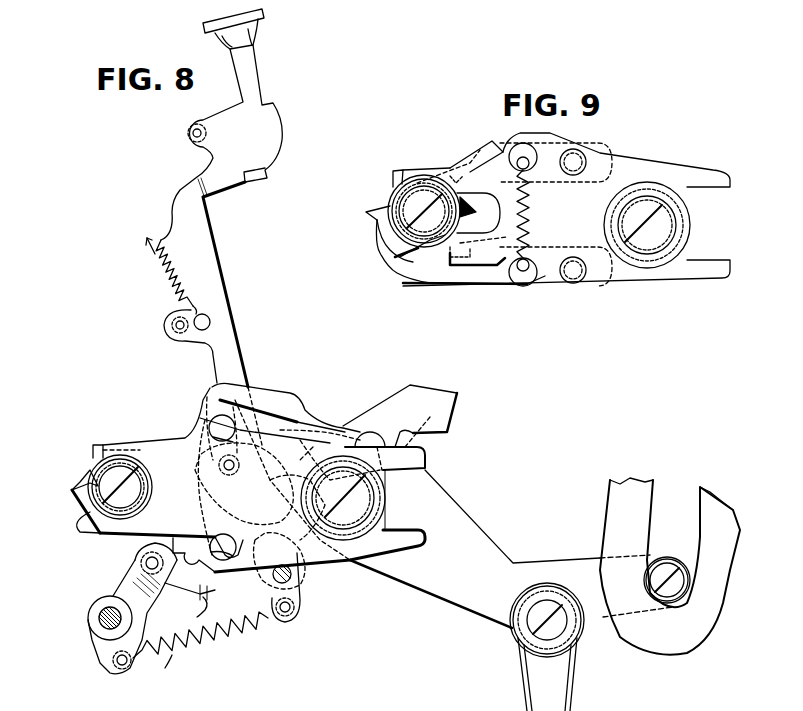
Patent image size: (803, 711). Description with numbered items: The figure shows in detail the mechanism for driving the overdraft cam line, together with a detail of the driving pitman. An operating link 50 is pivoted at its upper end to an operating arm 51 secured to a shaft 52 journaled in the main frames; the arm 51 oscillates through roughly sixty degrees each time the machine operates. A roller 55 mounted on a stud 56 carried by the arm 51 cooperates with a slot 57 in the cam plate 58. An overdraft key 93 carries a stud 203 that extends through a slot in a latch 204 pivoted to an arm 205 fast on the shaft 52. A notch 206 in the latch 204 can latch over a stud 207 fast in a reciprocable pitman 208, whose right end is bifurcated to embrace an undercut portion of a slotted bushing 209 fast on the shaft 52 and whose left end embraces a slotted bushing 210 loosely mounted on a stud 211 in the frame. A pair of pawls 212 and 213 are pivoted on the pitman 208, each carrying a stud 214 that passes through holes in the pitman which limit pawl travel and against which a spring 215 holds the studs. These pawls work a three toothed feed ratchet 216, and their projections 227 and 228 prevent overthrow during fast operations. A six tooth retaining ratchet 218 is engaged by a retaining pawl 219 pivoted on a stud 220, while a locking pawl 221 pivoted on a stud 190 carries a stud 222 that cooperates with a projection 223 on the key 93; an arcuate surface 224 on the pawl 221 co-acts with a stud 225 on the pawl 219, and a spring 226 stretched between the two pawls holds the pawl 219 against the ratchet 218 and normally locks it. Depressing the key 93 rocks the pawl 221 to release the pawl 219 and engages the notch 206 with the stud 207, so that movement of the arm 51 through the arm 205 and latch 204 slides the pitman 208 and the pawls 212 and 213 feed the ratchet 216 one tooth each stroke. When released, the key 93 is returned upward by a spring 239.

In FIG. 8, the overdraft key 93 is at (248, 76).
In FIG. 8, the spring 239 is at (160, 246).
In FIG. 8, the stud 203 is at (213, 397).
In FIG. 8, the retaining ratchet 218 is at (103, 446).
In FIG. 9, the retaining ratchet 218 is at (396, 170).
In FIG. 8, the stud 211 is at (105, 484).
In FIG. 9, the stud 211 is at (408, 203).
In FIG. 8, the feed ratchet 216 is at (78, 492).
In FIG. 9, the feed ratchet 216 is at (368, 213).
In FIG. 8, the bushing 210 is at (92, 515).
In FIG. 9, the bushing 210 is at (420, 264).
In FIG. 8, the stud 207 is at (223, 465).
In FIG. 8, the notch 206 is at (244, 484).
In FIG. 8, the latch 204 is at (328, 425).
In FIG. 8, the arm 205 is at (398, 419).
In FIG. 8, the shaft 52 is at (370, 505).
In FIG. 9, the shaft 52 is at (670, 228).
In FIG. 8, the slotted bushing 209 is at (380, 510).
In FIG. 9, the slotted bushing 209 is at (612, 208).
In FIG. 8, the pitman 208 is at (397, 545).
In FIG. 9, the pitman 208 is at (615, 168).
In FIG. 8, the projection 223 is at (209, 533).
In FIG. 8, the retaining pawl 219 is at (150, 546).
In FIG. 8, the stud 225 is at (143, 567).
In FIG. 8, the stud 220 is at (106, 614).
In FIG. 8, the arcuate surface 224 is at (195, 592).
In FIG. 8, the locking pawl 221 is at (200, 612).
In FIG. 8, the stud 222 is at (200, 635).
In FIG. 8, the spring 226 is at (183, 670).
In FIG. 8, the stud 190 is at (295, 597).
In FIG. 8, the operating arm 51 is at (513, 563).
In FIG. 8, the operating link 50 is at (543, 595).
In FIG. 8, the slot 57 is at (640, 518).
In FIG. 8, the cam plate 58 is at (612, 490).
In FIG. 8, the roller 55 is at (682, 541).
In FIG. 8, the stud 56 is at (668, 592).
In FIG. 9, the pawl 212 is at (495, 135).
In FIG. 9, the pawl 213 is at (478, 283).
In FIG. 9, the stud 214 is at (528, 167).
In FIG. 9, the projection 227 is at (480, 202).
In FIG. 9, the spring 215 is at (520, 240).
In FIG. 9, the projection 228 is at (378, 238).